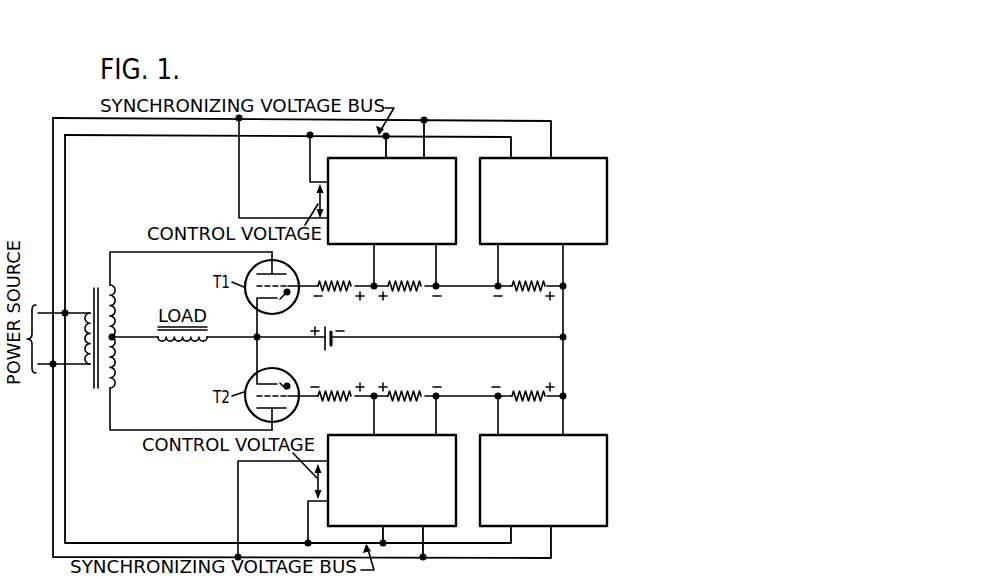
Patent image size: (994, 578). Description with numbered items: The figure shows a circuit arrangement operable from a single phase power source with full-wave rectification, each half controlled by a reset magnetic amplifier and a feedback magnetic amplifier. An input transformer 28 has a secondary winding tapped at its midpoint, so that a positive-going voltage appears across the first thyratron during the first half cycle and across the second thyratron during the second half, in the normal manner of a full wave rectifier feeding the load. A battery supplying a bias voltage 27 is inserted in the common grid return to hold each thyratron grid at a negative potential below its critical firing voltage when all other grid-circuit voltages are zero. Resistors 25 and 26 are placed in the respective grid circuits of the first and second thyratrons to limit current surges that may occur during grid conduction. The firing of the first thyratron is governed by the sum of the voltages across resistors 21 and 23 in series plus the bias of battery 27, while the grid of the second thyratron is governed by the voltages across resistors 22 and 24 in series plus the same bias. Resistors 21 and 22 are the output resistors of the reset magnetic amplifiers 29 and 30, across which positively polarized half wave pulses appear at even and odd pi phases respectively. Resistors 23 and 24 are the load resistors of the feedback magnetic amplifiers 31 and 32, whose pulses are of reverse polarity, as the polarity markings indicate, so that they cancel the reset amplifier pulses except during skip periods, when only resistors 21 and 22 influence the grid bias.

The output resistor 21 is at (401, 280).
The output resistor 22 is at (404, 387).
The load resistor 23 is at (530, 275).
The load resistor 24 is at (531, 387).
The resistor 25 is at (336, 280).
The resistor 26 is at (341, 387).
The bias voltage battery 27 is at (333, 328).
The input transformer 28 is at (96, 287).
The reset magnetic amplifier 29 is at (434, 157).
The reset magnetic amplifier 30 is at (448, 434).
The feedback magnetic amplifier 31 is at (607, 189).
The feedback magnetic amplifier 32 is at (607, 466).